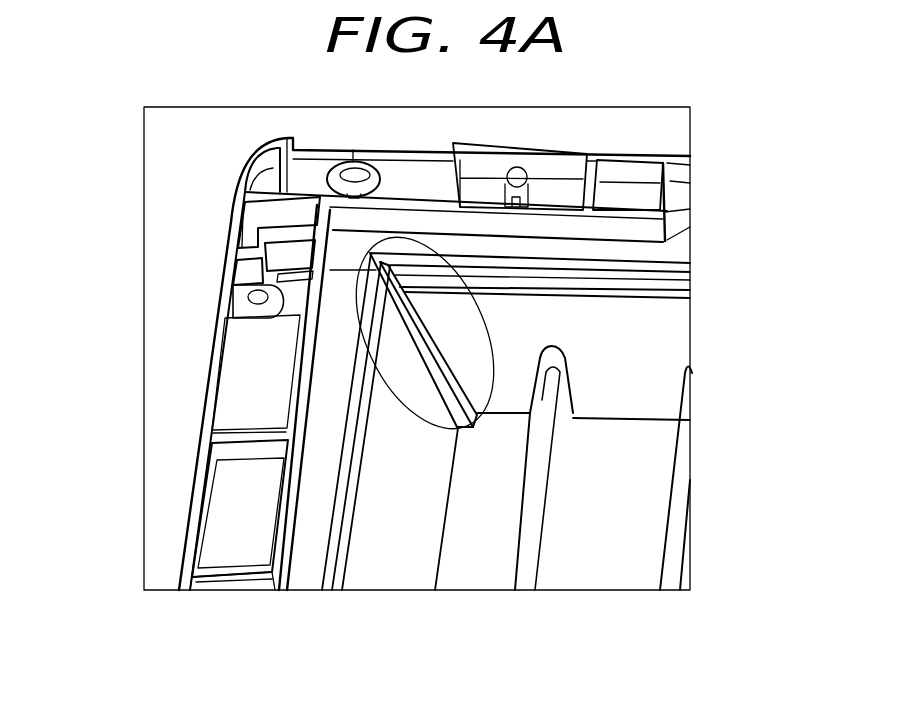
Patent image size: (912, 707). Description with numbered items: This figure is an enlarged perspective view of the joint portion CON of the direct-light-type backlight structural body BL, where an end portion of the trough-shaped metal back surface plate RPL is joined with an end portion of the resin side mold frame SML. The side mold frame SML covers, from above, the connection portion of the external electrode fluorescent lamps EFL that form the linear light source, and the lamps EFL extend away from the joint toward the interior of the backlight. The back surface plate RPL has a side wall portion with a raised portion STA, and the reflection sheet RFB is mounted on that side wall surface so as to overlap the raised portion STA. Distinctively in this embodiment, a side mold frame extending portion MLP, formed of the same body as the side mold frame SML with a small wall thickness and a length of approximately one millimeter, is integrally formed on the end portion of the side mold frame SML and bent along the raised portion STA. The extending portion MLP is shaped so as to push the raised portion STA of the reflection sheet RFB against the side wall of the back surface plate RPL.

The backlight structural body BL is at (692, 251).
The joint portion CON is at (398, 390).
The back surface plate RPL is at (228, 553).
The raised portion STA is at (377, 578).
The side mold frame extending portion MLP is at (427, 343).
The side mold frame SML is at (660, 323).
The external electrode fluorescent lamps EFL is at (522, 580).
The reflection sheet RFB is at (638, 577).